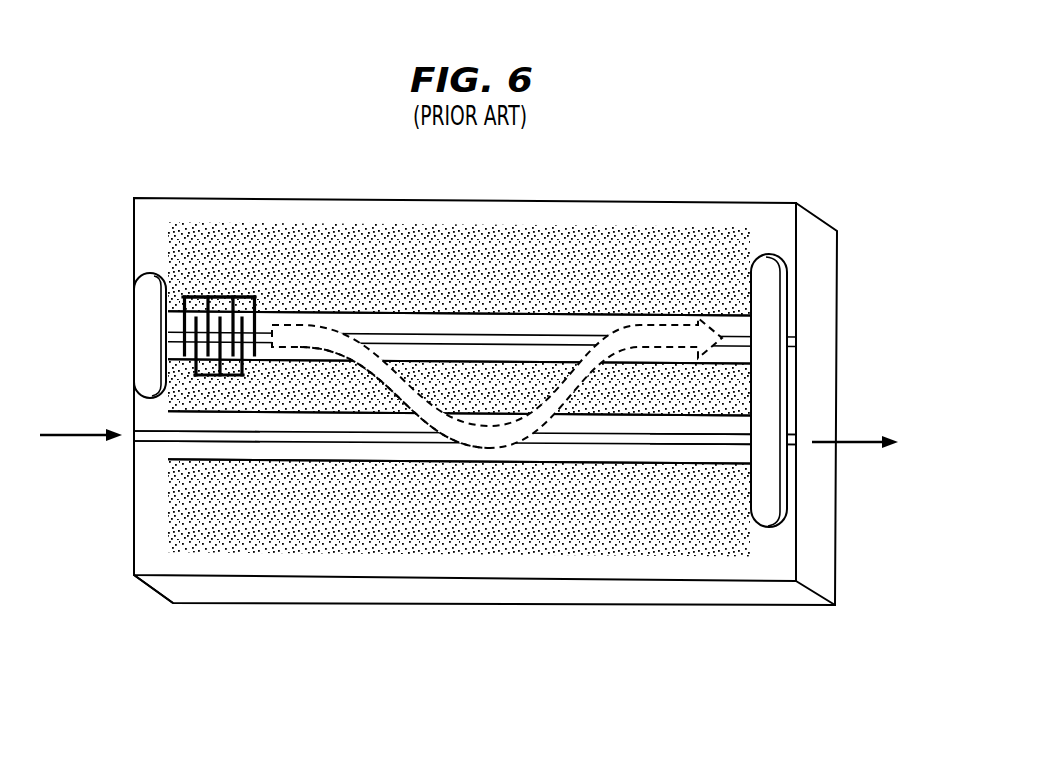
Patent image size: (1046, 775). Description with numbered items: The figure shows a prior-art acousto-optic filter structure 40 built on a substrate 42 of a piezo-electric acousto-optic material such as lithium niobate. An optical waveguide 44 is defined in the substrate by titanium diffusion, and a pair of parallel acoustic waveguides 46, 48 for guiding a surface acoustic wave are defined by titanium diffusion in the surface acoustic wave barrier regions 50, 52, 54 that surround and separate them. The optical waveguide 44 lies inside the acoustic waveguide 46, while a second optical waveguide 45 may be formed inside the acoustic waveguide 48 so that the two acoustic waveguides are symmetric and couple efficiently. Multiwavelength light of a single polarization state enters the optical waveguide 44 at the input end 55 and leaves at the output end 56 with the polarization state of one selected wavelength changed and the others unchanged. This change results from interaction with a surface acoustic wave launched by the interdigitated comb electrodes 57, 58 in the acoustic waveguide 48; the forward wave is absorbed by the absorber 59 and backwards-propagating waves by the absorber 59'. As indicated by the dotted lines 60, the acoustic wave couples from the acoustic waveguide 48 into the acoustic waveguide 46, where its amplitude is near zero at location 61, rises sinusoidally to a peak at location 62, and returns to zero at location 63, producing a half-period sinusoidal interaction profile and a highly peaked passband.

The filter structure 40 is at (196, 635).
The substrate 42 is at (670, 202).
The optical waveguide 44 is at (600, 447).
The second optical waveguide 45 is at (558, 340).
The acoustic waveguide 46 is at (315, 453).
The acoustic waveguide 48 is at (425, 322).
The surface acoustic wave barrier region 50 is at (412, 508).
The surface acoustic wave barrier region 52 is at (497, 380).
The surface acoustic wave barrier region 54 is at (323, 268).
The input end 55 is at (134, 436).
The output end 56 is at (805, 447).
The interdigitated comb electrode 57 is at (226, 297).
The interdigitated comb electrode 58 is at (193, 374).
The absorber 59 is at (830, 400).
The absorber 59' is at (105, 335).
The dotted lines 60 is at (372, 385).
The location 61 is at (258, 443).
The location 62 is at (488, 440).
The location 63 is at (712, 447).